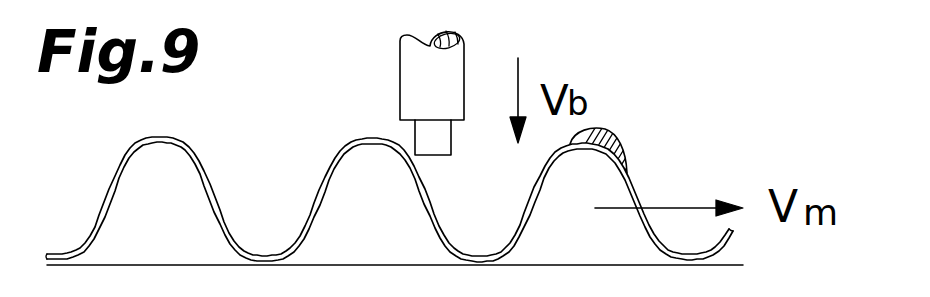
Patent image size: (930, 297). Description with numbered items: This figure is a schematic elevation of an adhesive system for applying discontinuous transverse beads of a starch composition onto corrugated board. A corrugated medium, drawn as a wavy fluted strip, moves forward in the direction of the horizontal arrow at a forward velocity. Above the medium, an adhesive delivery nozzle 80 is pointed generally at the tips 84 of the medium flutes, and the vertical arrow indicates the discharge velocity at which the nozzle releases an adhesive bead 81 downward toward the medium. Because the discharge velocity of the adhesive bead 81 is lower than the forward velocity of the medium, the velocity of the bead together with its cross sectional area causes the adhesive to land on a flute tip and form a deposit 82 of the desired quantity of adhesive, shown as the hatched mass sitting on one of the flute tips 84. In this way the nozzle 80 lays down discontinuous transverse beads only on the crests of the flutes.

The adhesive delivery nozzle 80 is at (464, 58).
The adhesive bead 81 is at (452, 148).
The deposit 82 is at (622, 136).
The tip of medium flute 84 is at (176, 138).